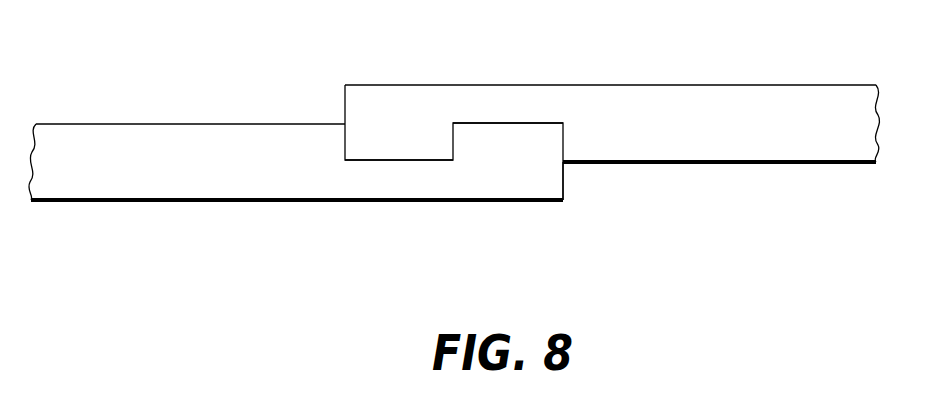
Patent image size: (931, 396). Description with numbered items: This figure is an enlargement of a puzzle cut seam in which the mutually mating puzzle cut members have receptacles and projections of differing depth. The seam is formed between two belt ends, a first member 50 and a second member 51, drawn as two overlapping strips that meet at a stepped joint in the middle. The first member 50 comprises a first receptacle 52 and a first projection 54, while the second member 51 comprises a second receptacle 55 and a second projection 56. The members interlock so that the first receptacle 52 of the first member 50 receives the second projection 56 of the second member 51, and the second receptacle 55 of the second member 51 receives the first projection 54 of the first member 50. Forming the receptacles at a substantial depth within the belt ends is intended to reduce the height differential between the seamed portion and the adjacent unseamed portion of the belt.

The first member 50 is at (737, 120).
The second member 51 is at (183, 162).
The first receptacle 52 is at (516, 122).
The first projection 54 is at (387, 127).
The second receptacle 55 is at (407, 162).
The second projection 56 is at (565, 182).